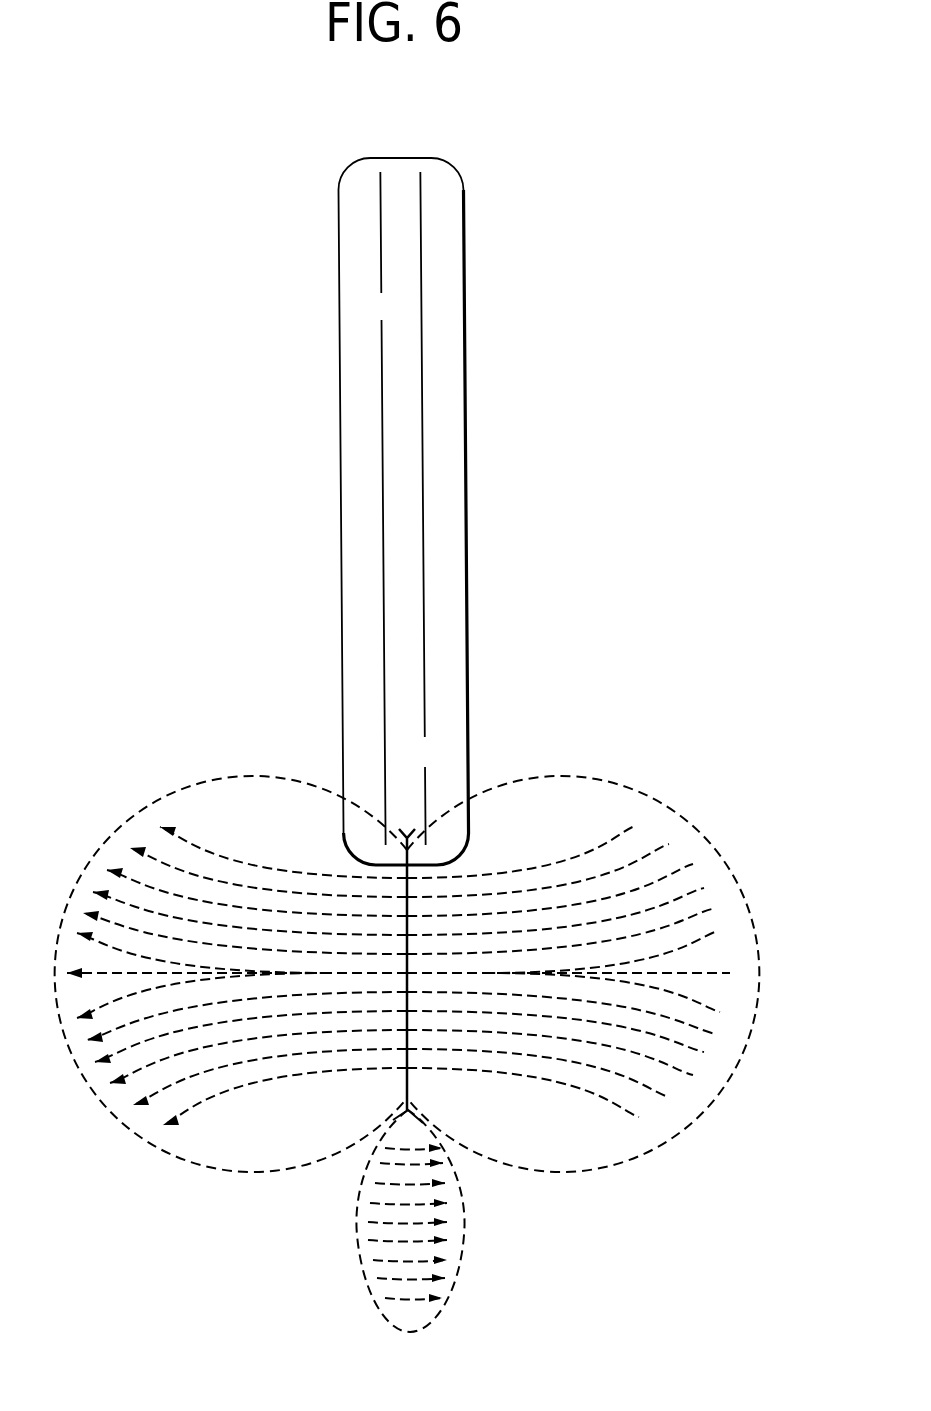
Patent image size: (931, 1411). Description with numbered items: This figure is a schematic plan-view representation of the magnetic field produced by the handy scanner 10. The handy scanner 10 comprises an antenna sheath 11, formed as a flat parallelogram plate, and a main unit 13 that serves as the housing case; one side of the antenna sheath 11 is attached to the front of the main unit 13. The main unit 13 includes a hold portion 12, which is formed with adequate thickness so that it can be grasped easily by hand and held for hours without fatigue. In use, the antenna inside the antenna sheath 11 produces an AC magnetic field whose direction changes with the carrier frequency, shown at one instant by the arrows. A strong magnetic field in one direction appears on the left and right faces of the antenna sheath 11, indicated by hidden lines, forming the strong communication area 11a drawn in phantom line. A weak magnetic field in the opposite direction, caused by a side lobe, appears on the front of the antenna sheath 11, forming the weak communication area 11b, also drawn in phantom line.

The handy scanner 10 is at (324, 511).
The antenna sheath 11 is at (405, 1089).
The strong communication area 11a is at (583, 776).
The weak communication area 11b is at (467, 1232).
The hold portion 12 is at (393, 414).
The main unit 13 is at (342, 641).